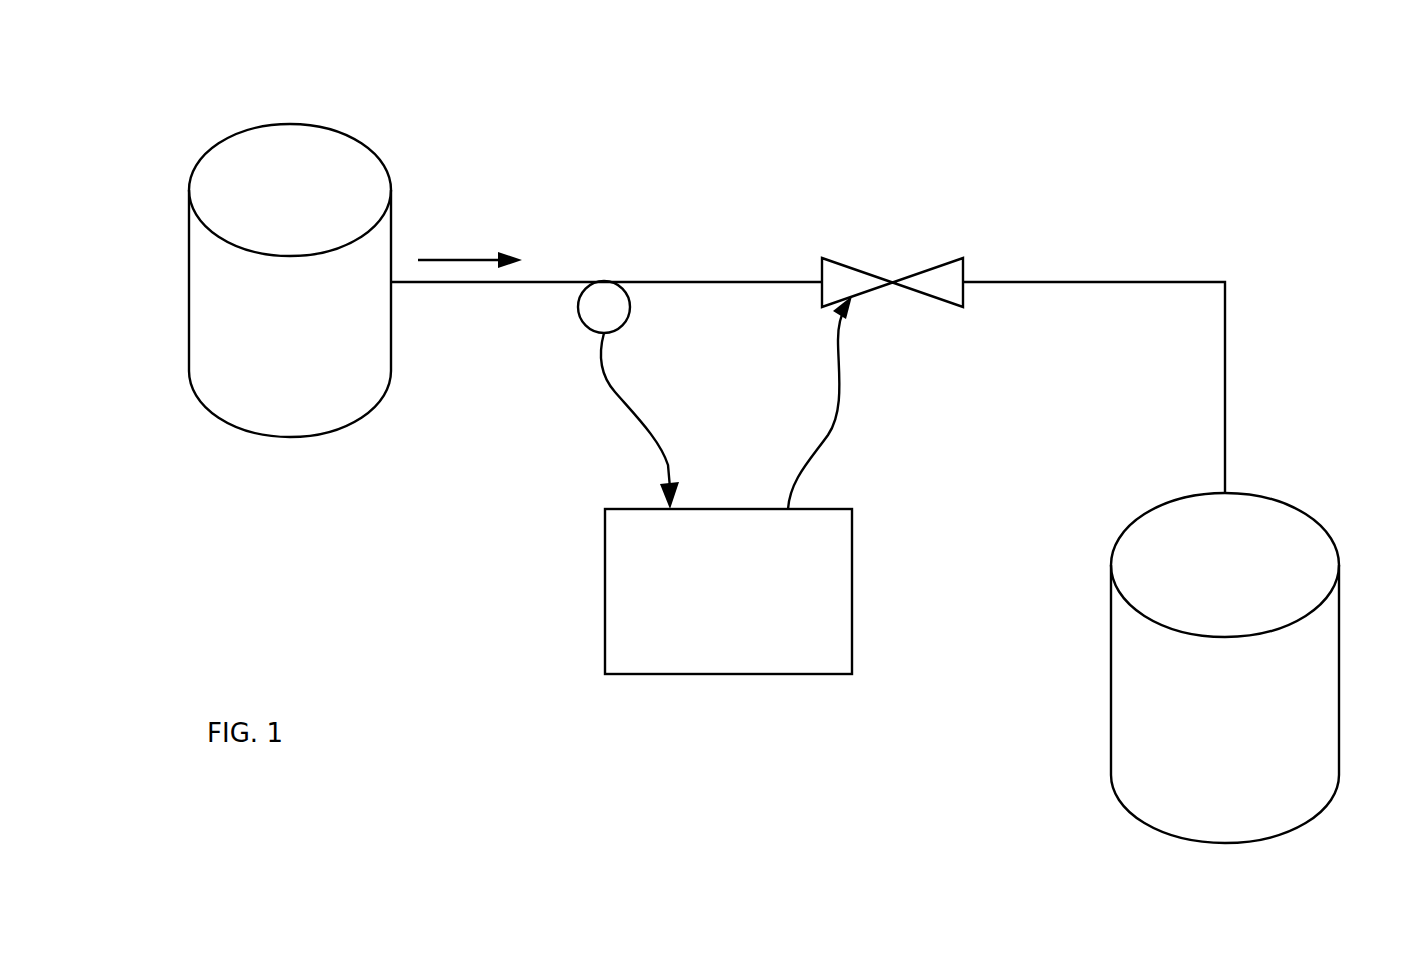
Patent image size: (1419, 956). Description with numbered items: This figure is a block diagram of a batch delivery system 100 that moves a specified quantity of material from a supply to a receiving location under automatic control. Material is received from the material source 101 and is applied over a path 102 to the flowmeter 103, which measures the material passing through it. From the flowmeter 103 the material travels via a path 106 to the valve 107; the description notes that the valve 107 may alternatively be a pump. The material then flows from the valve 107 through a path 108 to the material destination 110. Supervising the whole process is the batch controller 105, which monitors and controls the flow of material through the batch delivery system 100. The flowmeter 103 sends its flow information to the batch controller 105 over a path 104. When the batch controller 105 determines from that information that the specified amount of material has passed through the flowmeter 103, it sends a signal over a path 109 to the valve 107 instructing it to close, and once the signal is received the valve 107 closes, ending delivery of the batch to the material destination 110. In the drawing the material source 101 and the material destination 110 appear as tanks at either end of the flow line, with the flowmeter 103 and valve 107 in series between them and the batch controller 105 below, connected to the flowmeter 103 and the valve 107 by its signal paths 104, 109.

The batch delivery system 100 is at (449, 98).
The material source 101 is at (189, 250).
The path 102 is at (543, 280).
The flowmeter 103 is at (582, 322).
The path 104 is at (637, 410).
The batch controller 105 is at (787, 675).
The path 106 is at (667, 280).
The valve 107 is at (920, 268).
The path 108 is at (1057, 280).
The path 109 is at (842, 408).
The material destination 110 is at (1341, 627).